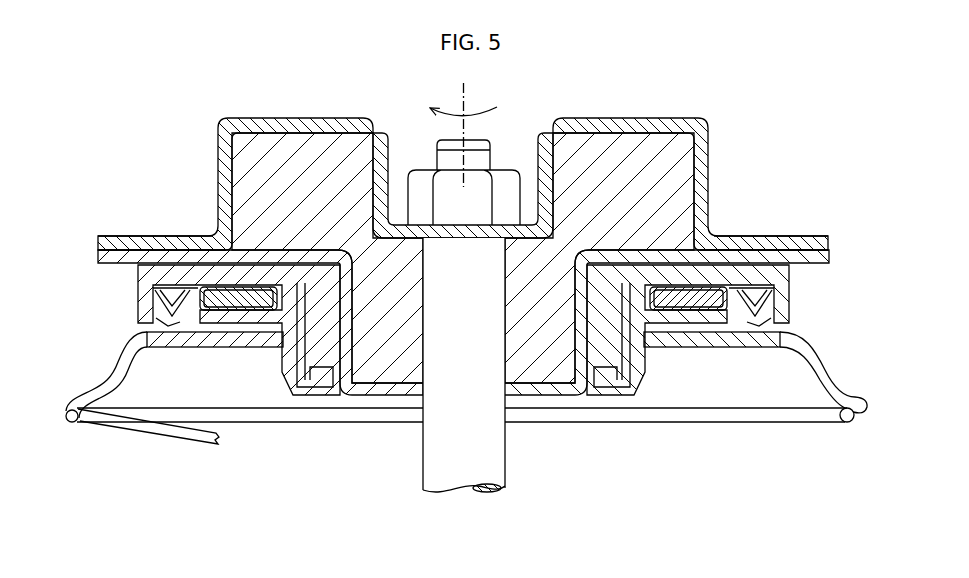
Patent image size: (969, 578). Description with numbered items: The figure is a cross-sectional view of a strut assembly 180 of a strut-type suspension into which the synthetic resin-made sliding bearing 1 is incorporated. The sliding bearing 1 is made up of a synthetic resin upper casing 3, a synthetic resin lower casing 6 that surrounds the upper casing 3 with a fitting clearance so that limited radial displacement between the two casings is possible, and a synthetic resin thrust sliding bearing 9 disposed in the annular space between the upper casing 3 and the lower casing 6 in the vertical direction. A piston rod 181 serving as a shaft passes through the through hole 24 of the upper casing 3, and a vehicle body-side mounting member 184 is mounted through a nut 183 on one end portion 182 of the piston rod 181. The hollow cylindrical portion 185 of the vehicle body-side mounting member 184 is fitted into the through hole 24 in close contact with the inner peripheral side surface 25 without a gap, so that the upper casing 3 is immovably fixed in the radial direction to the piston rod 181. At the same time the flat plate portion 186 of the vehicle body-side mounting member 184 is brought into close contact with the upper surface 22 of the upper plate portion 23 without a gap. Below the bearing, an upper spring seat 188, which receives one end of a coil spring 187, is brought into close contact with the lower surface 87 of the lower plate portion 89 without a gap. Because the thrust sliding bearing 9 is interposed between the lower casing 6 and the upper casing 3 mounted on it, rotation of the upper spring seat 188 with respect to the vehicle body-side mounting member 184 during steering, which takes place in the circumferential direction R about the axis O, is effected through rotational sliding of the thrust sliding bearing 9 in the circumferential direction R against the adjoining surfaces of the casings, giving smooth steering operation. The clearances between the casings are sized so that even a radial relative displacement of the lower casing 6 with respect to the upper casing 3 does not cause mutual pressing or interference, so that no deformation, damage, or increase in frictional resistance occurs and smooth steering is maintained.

The synthetic resin-made sliding bearing 1 is at (801, 298).
The upper casing 3 is at (136, 292).
The lower casing 6 is at (198, 346).
The thrust sliding bearing 9 is at (710, 305).
The upper surface 22 is at (706, 247).
The upper plate portion 23 is at (167, 278).
The through hole 24 is at (402, 352).
The inner peripheral side surface 25 is at (347, 306).
The lower surface 87 is at (221, 334).
The lower plate portion 89 is at (698, 326).
The strut assembly 180 is at (763, 204).
The piston rod 181 is at (472, 455).
The one end portion 182 is at (447, 160).
The nut 183 is at (505, 193).
The vehicle body-side mounting member 184 is at (146, 243).
The hollow cylindrical portion 185 is at (570, 345).
The flat plate portion 186 is at (790, 258).
The coil spring 187 is at (314, 410).
The upper spring seat 188 is at (115, 378).
The axis O is at (466, 90).
The circumferential direction R is at (492, 119).